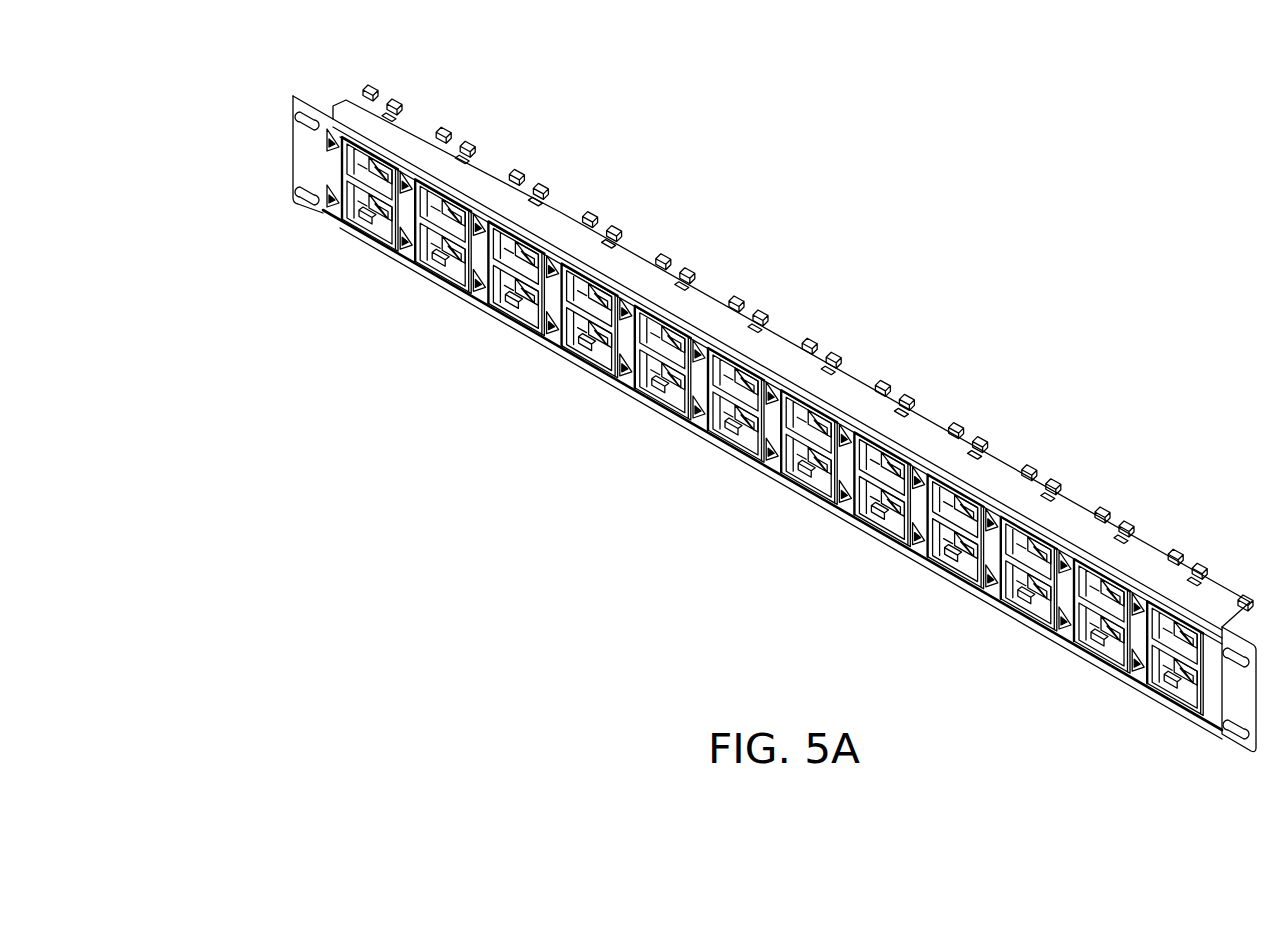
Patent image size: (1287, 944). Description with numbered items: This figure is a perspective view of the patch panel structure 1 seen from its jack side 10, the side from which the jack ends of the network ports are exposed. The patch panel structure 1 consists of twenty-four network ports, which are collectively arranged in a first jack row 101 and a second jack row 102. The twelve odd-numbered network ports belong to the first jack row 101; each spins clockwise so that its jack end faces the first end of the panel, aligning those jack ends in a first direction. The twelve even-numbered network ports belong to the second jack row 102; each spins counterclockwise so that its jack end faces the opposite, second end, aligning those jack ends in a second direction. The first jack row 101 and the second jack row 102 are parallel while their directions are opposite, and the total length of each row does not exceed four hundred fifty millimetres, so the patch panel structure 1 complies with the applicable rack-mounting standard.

The patch panel structure 1 is at (1223, 270).
The jack side 10 is at (301, 227).
The first jack row 101 is at (291, 115).
The second jack row 102 is at (291, 181).